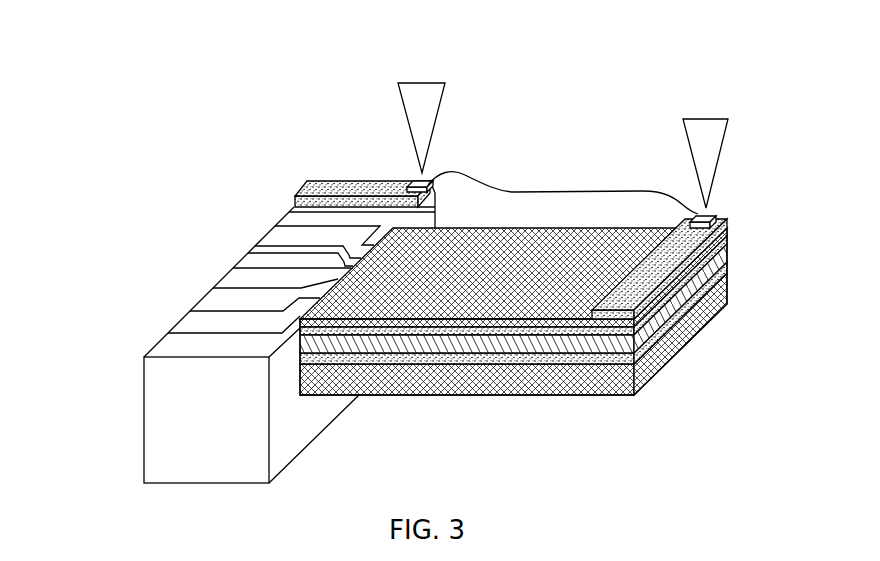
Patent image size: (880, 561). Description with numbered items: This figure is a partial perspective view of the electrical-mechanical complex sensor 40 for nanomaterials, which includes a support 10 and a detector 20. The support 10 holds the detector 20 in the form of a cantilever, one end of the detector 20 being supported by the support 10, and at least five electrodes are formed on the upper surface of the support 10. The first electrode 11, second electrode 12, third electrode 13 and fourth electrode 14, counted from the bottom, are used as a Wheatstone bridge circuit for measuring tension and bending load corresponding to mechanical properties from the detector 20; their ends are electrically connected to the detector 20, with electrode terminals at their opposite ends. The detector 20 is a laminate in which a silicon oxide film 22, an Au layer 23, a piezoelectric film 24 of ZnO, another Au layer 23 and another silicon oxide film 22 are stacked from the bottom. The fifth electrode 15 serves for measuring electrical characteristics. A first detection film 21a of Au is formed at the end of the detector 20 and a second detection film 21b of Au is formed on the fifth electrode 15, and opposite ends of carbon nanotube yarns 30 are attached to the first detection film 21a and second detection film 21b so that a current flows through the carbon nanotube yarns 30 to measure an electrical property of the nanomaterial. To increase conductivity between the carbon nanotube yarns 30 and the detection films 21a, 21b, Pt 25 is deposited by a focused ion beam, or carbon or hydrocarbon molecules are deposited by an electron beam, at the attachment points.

The support 10 is at (136, 393).
The first electrode 11 is at (192, 322).
The second electrode 12 is at (236, 283).
The third electrode 13 is at (257, 258).
The fourth electrode 14 is at (291, 233).
The fifth electrode 15 is at (295, 203).
The detector 20 is at (562, 351).
The first detection film 21a is at (728, 220).
The second detection film 21b is at (317, 182).
The silicon oxide film 22 is at (728, 231).
The Au layer 23 is at (728, 243).
The piezoelectric film 24 is at (728, 262).
The Pt 25 is at (412, 181).
The carbon nanotube yarns 30 is at (565, 190).
The complex sensor 40 is at (497, 142).